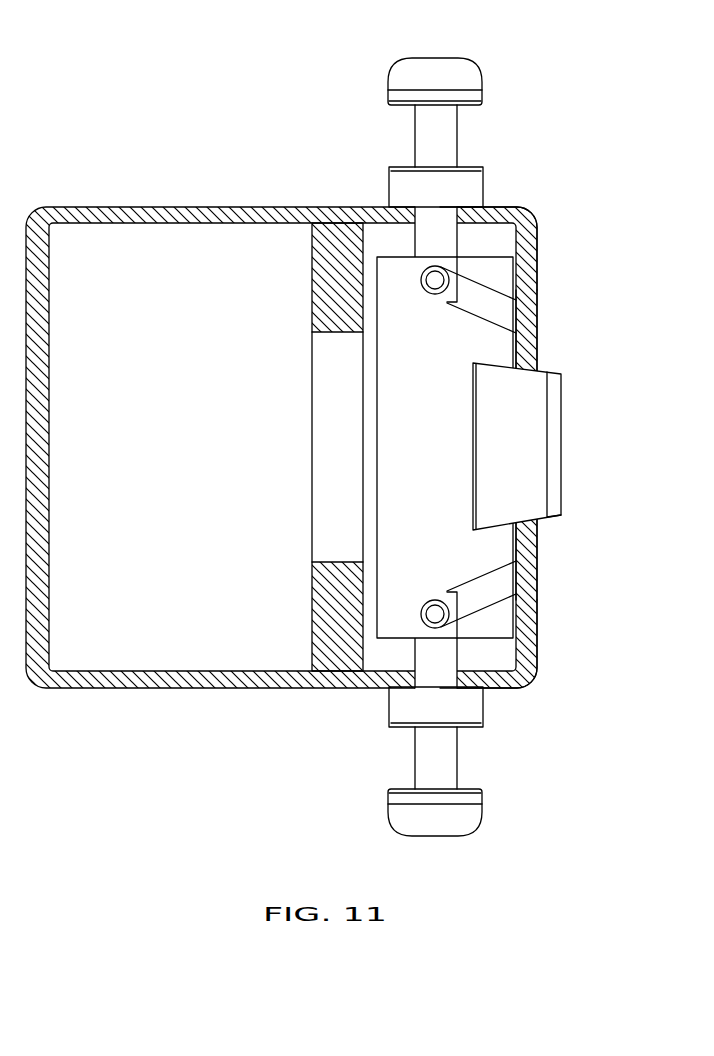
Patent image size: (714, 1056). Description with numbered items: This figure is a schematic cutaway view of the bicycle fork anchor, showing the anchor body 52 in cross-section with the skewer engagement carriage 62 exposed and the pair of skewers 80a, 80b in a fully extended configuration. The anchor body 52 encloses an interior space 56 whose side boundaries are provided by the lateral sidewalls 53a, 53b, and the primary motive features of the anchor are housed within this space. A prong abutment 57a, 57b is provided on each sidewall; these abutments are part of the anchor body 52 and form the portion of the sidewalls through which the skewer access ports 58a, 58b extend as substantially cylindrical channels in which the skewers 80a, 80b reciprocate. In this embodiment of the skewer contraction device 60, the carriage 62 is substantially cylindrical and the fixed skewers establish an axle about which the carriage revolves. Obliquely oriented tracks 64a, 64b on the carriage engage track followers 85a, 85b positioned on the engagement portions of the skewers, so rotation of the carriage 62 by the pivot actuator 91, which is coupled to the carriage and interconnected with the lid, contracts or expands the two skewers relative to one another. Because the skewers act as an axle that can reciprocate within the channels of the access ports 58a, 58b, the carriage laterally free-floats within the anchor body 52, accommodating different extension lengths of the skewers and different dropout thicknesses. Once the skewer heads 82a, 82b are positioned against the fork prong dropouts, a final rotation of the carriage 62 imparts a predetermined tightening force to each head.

The anchor body 52 is at (197, 184).
The lateral sidewall 53a is at (480, 222).
The lateral sidewall 53b is at (517, 678).
The interior space 56 is at (502, 652).
The prong abutment 57a is at (473, 188).
The prong abutment 57b is at (470, 708).
The skewer access port 58a is at (413, 219).
The skewer access port 58b is at (413, 677).
The skewer contraction device 60 is at (451, 447).
The skewer engagement carriage 62 is at (400, 453).
The obliquely oriented track 64a is at (500, 316).
The obliquely oriented track 64b is at (505, 578).
The skewer 80a is at (465, 140).
The skewer 80b is at (462, 756).
The skewer head 82a is at (444, 74).
The skewer head 82b is at (462, 815).
The track follower 85a is at (430, 289).
The track follower 85b is at (432, 603).
The pivot actuator 91 is at (527, 453).